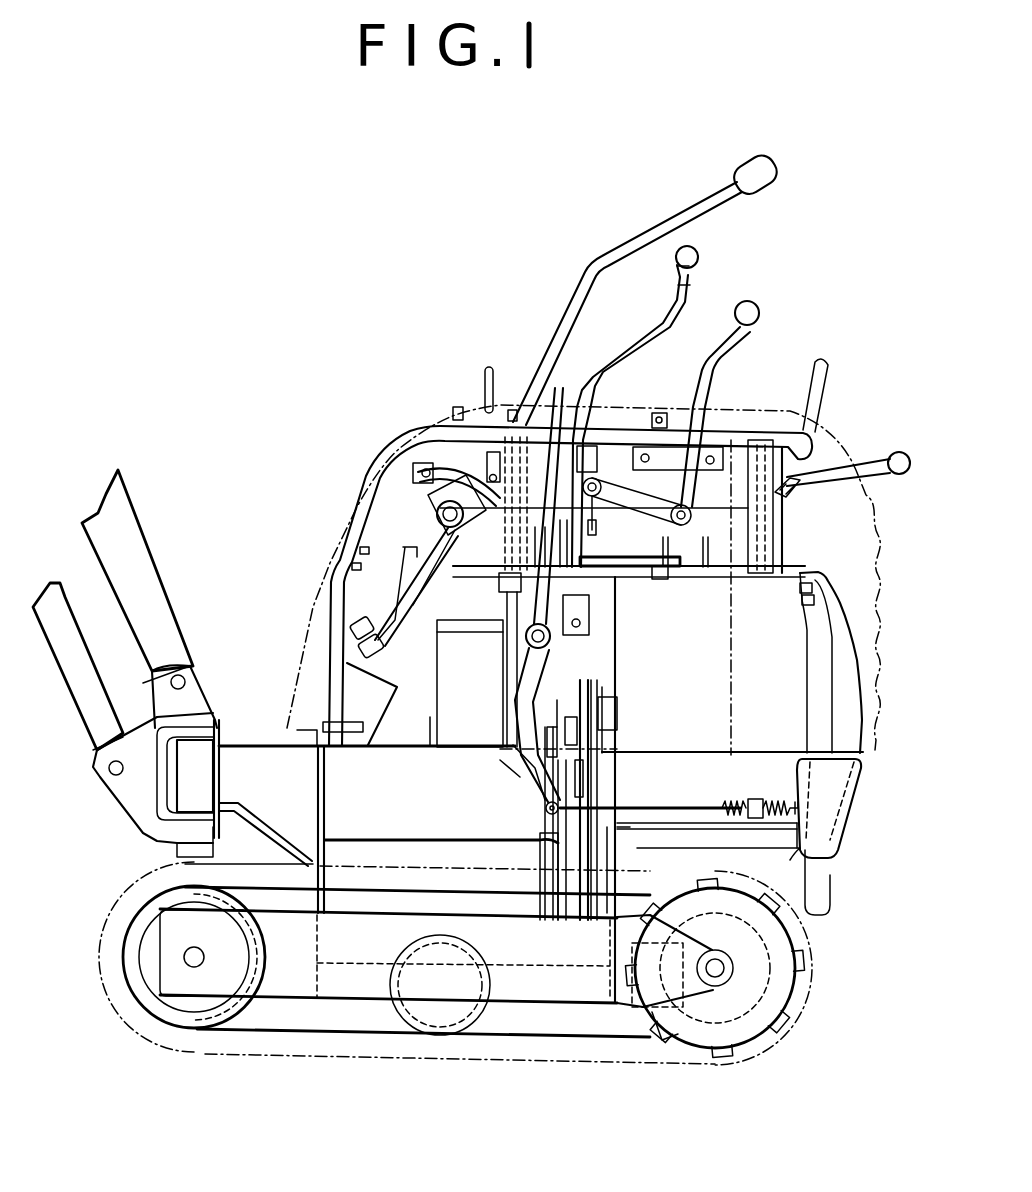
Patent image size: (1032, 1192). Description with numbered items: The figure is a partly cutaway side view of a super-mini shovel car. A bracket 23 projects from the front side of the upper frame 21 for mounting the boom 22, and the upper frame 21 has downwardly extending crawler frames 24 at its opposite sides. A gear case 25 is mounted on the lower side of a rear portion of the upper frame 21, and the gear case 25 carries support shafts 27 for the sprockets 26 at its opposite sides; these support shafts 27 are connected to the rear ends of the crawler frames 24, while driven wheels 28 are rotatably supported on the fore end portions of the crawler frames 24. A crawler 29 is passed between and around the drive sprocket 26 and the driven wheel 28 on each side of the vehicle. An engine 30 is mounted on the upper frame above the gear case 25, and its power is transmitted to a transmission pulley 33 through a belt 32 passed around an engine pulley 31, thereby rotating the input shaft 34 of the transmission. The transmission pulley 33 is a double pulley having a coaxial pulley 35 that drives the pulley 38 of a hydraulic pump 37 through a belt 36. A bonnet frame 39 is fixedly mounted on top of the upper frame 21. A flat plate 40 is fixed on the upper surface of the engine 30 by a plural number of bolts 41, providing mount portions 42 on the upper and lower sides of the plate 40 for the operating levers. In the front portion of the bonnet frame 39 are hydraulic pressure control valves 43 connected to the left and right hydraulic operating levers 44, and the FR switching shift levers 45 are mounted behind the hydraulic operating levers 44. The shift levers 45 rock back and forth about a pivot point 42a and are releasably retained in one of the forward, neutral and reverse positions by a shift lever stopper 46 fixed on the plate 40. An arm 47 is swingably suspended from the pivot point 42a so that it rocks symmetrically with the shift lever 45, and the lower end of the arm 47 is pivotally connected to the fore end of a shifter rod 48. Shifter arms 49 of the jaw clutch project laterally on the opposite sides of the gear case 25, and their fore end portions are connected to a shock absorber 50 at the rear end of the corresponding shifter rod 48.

The upper frame 21 is at (340, 796).
The boom 22 is at (138, 550).
The bracket 23 is at (187, 788).
The crawler frames 24 is at (510, 995).
The gear case 25 is at (792, 890).
The sprockets 26 is at (650, 1027).
The support shafts 27 is at (709, 1003).
The driven wheels 28 is at (217, 1017).
The crawler 29 is at (351, 1068).
The engine 30 is at (787, 713).
The engine pulley 31 is at (612, 703).
The belt 32 is at (597, 748).
The transmission pulley 33 is at (577, 905).
The input shaft 34 is at (602, 905).
The coaxial pulley 35 is at (537, 900).
The belt 36 is at (540, 836).
The hydraulic pump 37 is at (513, 772).
The pulley 38 is at (558, 706).
The bonnet frame 39 is at (377, 488).
The flat plate 40 is at (633, 568).
The bolts 41 is at (690, 580).
The mount portions 42 is at (407, 492).
The pivot point 42a is at (550, 642).
The hydraulic pressure control valves 43 is at (357, 683).
The hydraulic operating levers 44 is at (578, 291).
The FR switching shift levers 45 is at (680, 300).
The shift lever stopper 46 is at (622, 462).
The arm 47 is at (537, 657).
The shifter rod 48 is at (680, 806).
The shifter arms 49 is at (813, 835).
The shock absorber 50 is at (749, 795).